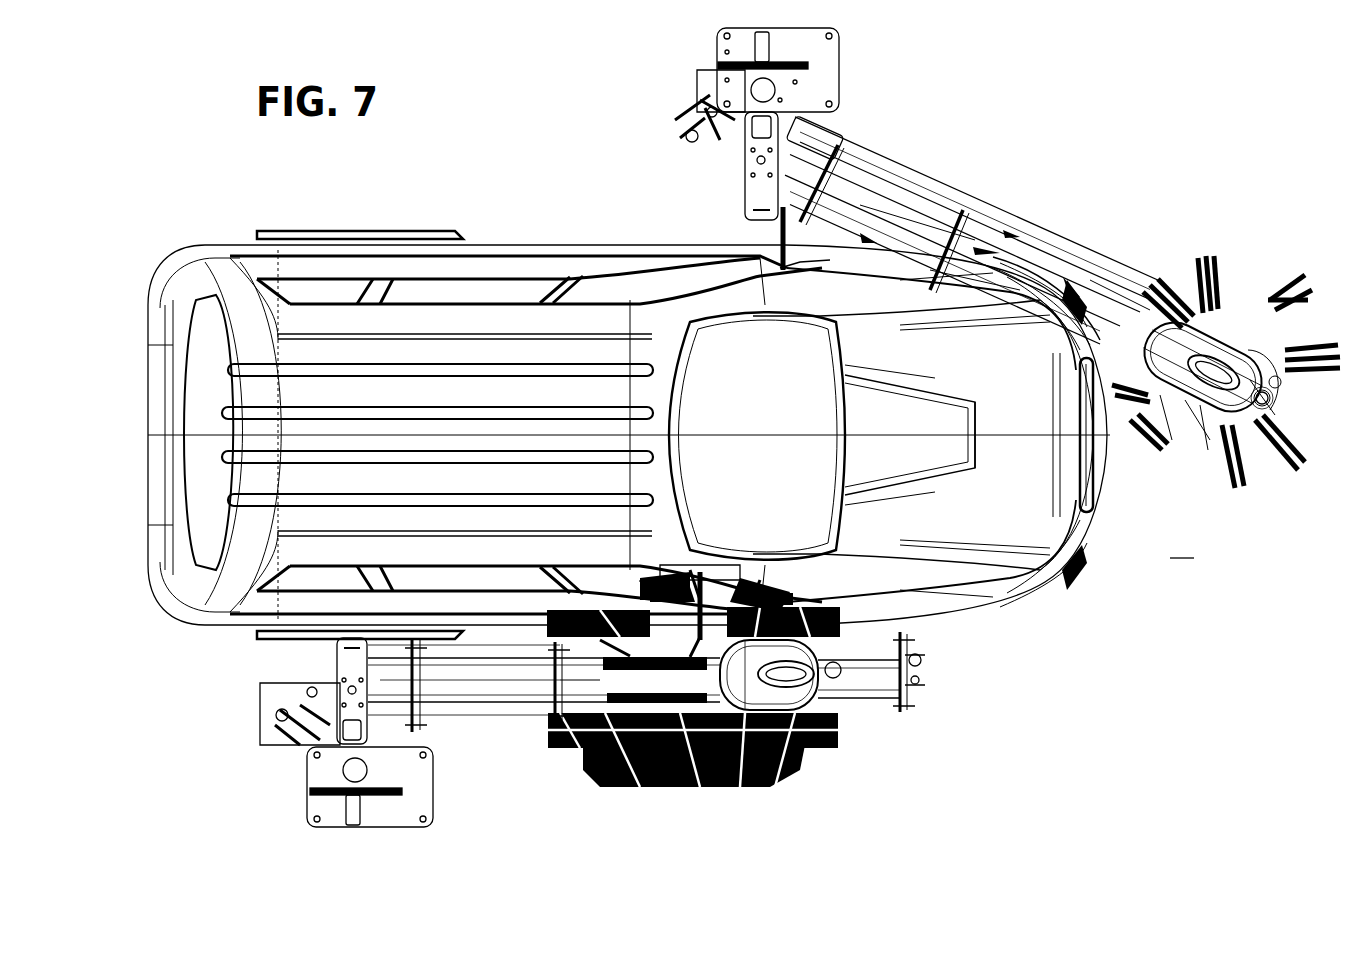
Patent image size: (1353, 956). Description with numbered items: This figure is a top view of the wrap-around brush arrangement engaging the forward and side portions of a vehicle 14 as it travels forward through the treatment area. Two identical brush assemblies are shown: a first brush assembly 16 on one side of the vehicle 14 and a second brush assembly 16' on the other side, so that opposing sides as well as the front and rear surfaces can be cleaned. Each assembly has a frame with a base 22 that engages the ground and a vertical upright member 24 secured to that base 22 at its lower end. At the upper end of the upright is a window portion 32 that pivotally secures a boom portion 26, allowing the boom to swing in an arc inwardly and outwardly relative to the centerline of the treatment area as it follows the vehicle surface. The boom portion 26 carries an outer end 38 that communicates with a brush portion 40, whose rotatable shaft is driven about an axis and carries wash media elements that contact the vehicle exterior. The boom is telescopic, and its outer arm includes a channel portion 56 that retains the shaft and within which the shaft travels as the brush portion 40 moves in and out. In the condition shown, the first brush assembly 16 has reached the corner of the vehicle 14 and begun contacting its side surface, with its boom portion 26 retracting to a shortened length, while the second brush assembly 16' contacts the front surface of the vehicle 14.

The vehicle 14 is at (530, 258).
The first brush assembly 16 is at (1194, 298).
The second brush assembly 16' is at (666, 683).
The base 22 is at (840, 58).
The vertical upright member 24 is at (1194, 558).
The boom portion 26 is at (983, 228).
The window portion 32 is at (745, 192).
The outer end 38 is at (1268, 398).
The brush portion 40 is at (1232, 283).
The channel portion 56 is at (1108, 300).